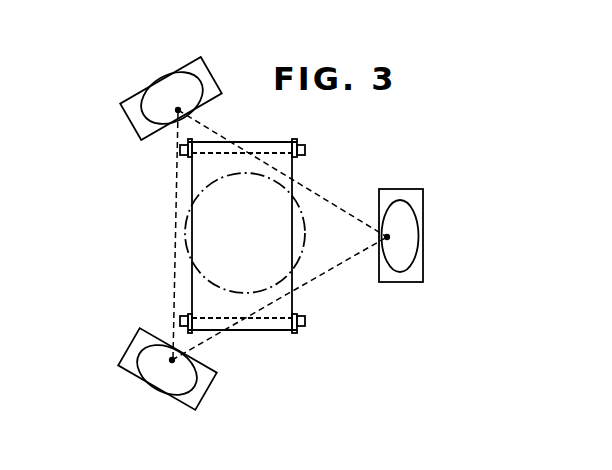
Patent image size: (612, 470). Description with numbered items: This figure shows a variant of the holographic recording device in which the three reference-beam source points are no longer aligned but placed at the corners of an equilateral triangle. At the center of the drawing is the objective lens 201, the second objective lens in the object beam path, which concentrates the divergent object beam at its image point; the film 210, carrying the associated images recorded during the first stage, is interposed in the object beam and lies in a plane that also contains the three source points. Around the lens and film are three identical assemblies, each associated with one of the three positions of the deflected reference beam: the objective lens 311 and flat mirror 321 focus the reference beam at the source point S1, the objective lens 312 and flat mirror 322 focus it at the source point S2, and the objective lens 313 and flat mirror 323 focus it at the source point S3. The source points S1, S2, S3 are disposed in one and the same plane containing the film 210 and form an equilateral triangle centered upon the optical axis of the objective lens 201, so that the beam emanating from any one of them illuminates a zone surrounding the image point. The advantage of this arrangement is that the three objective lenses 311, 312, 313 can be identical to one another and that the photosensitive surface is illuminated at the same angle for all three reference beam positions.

The second objective lens 201 is at (215, 268).
The film 210 is at (205, 172).
The first objective lens of reference beam 311 is at (402, 251).
The second objective lens of reference beam 312 is at (158, 107).
The third objective lens of reference beam 313 is at (155, 367).
The first flat mirror 321 is at (417, 197).
The second flat mirror 322 is at (133, 103).
The third flat mirror 323 is at (188, 400).
The first source point S1 is at (388, 235).
The second source point S2 is at (178, 110).
The third source point S3 is at (175, 360).